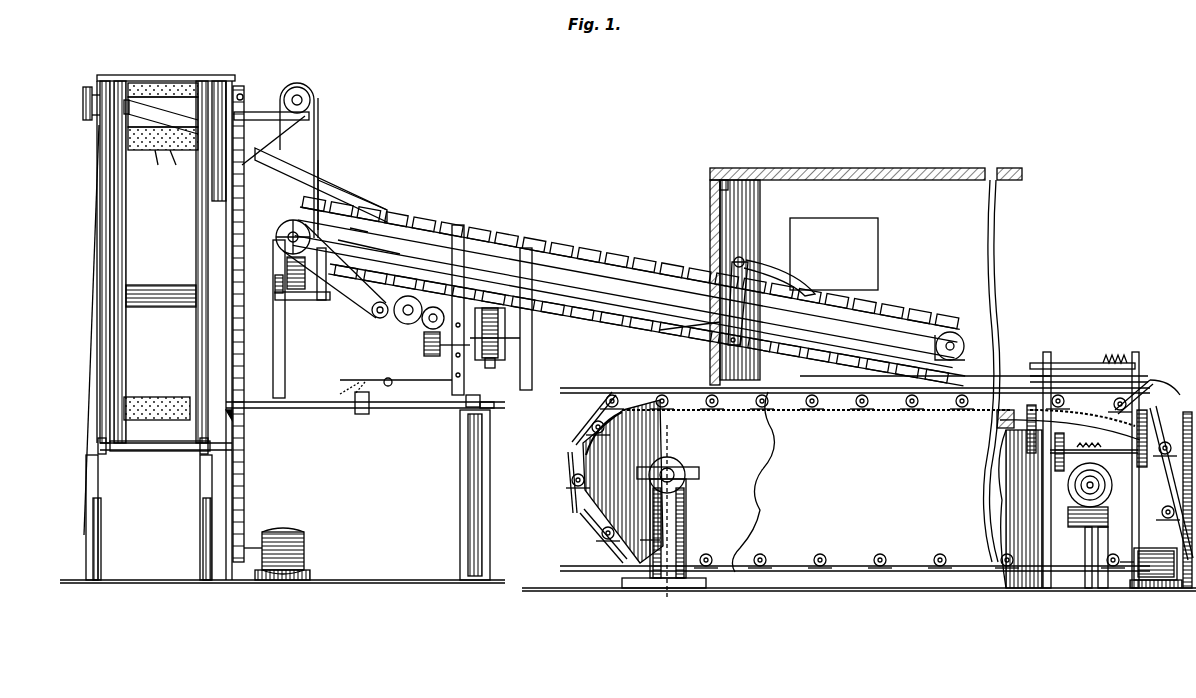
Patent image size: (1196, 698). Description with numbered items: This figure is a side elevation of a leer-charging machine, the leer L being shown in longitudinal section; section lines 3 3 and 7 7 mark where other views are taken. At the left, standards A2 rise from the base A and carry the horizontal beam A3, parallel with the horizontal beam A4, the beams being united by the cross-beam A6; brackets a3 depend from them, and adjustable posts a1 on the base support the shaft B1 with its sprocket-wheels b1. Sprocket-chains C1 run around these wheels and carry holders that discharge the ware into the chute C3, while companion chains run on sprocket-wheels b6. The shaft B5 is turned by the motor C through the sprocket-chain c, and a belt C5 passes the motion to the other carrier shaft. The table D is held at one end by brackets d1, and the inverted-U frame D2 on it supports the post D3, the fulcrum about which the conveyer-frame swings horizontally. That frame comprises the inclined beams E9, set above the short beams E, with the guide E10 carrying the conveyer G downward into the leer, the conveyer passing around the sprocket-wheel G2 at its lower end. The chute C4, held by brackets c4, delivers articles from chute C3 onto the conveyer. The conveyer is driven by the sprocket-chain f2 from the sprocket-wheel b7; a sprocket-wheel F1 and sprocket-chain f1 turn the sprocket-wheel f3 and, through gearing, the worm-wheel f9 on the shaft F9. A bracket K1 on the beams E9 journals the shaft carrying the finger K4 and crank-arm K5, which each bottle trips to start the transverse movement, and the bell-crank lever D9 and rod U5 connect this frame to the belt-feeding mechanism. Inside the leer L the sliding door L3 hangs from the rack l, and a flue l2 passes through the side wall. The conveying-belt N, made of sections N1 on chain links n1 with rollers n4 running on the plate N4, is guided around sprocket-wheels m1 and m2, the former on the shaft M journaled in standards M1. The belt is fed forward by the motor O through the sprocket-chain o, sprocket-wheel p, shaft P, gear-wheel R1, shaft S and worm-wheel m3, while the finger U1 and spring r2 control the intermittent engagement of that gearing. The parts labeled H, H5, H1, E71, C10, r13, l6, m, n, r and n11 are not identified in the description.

The section line 3- 3 is at (235, 68).
The section line 7- 7 is at (660, 596).
The base A is at (398, 590).
The elevator casing H is at (166, 327).
The hopper A6 is at (145, 83).
The casing part A4 is at (222, 85).
The hopper chute H5 is at (165, 132).
The side plate C5 is at (83, 98).
The side plate A3 is at (82, 108).
The pivot a3 is at (120, 112).
The bucket part C3 is at (179, 168).
The bucket C1 is at (160, 316).
The elevator box H1 is at (200, 348).
The inclined guide A2 is at (98, 355).
The cross bar B1 is at (160, 461).
The bearing b1 is at (116, 460).
The leg a1 is at (200, 540).
The elevator chain c is at (247, 478).
The motor C is at (292, 532).
The bracket d1 is at (244, 424).
The frame beam b6 is at (262, 88).
The pulley B5 is at (302, 90).
The belt b7 is at (318, 100).
The belt strand f2 is at (322, 135).
The chute C4 is at (300, 185).
The pulley f1 is at (296, 256).
The bracket F1 is at (286, 262).
The post c4 is at (273, 280).
The belt E is at (360, 300).
The sprocket f3 is at (402, 322).
The gear f9 is at (430, 358).
The post D2 is at (290, 356).
The fork bracket F9 is at (530, 350).
The rod D9 is at (386, 380).
The table D is at (328, 410).
The table bracket D3 is at (462, 408).
The post r13 is at (490, 412).
The upper conveyor G is at (532, 256).
The conveyor frame E10 is at (590, 272).
The lower conveyor run E9 is at (620, 316).
The conveyor part E71 is at (336, 222).
The guide C10 is at (395, 248).
The link K1 is at (700, 330).
The lever K5 is at (720, 280).
The arm K4 is at (790, 284).
The pulley G2 is at (950, 332).
The oven wall L is at (860, 168).
The wall lining l is at (748, 176).
The wall L3 is at (708, 214).
The wall piece l6 is at (720, 182).
The window l2 is at (880, 236).
The partition m is at (992, 371).
The track n4 is at (806, 408).
The chain N4 is at (826, 412).
The drum N1 is at (596, 416).
The roller n1 is at (588, 430).
The guide r is at (566, 456).
The guide r2 is at (570, 470).
The roller n11 is at (732, 492).
The wall m1 is at (766, 460).
The pedestal bearing M is at (678, 462).
The pedestal M1 is at (686, 538).
The lower track n is at (845, 488).
The rod U5 is at (920, 364).
The block U1 is at (996, 418).
The wall m2 is at (1004, 464).
The rack R1 is at (1087, 470).
The shaft S is at (1094, 470).
The gear m3 is at (1066, 486).
The chain p is at (1166, 392).
The post P is at (1171, 484).
The motor o is at (1160, 592).
The motor base O is at (1150, 565).
The track N is at (1076, 408).